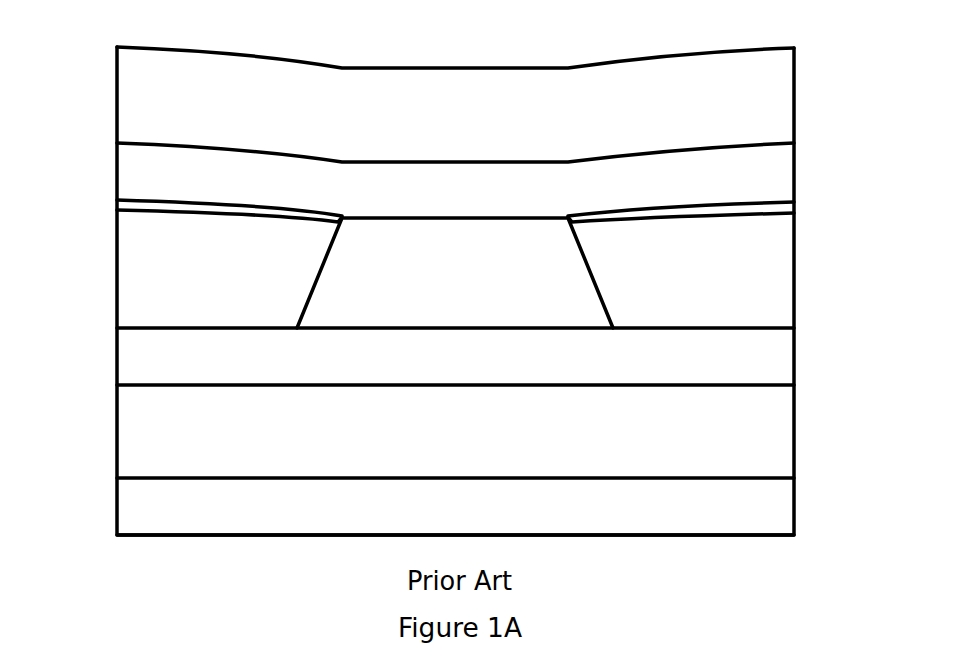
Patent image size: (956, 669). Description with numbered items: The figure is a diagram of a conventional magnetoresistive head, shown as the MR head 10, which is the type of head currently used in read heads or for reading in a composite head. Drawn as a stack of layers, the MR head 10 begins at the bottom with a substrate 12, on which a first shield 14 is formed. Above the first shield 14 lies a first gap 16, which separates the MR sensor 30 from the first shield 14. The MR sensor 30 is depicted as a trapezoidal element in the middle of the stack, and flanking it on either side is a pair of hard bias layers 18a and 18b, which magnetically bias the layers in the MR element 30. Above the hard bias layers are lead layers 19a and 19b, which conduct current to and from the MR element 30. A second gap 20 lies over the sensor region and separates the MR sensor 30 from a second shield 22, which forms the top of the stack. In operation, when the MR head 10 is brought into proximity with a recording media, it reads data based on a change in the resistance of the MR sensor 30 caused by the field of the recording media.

The MR head 10 is at (479, 28).
The substrate 12 is at (794, 497).
The first shield 14 is at (794, 423).
The first gap 16 is at (794, 357).
The hard bias layer 18a is at (117, 253).
The hard bias layer 18b is at (794, 272).
The lead layer 19a is at (117, 203).
The lead layer 19b is at (794, 205).
The second gap 20 is at (794, 162).
The second shield 22 is at (794, 92).
The MR sensor 30 is at (320, 267).